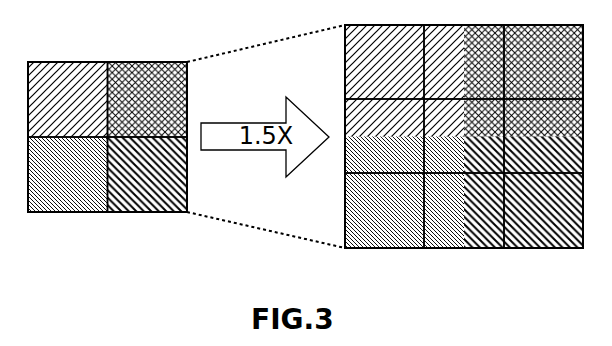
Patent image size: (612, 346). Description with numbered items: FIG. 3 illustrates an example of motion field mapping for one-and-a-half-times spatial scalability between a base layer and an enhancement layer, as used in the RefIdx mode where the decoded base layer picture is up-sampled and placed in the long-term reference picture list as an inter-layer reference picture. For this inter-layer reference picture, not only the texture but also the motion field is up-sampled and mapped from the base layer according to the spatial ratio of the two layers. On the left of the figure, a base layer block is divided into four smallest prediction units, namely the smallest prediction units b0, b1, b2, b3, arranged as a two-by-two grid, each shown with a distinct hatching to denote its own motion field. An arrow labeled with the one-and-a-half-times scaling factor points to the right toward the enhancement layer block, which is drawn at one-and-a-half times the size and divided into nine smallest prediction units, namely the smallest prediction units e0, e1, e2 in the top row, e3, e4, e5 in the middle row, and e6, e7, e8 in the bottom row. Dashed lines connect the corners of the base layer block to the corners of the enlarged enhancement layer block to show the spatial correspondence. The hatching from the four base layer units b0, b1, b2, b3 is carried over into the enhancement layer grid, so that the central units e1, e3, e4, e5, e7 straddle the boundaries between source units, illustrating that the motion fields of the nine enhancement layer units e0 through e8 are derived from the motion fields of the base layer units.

The smallest prediction unit b0 is at (68, 99).
The smallest prediction unit b1 is at (148, 99).
The smallest prediction unit b2 is at (68, 174).
The smallest prediction unit b3 is at (148, 174).
The smallest prediction unit e0 is at (384, 62).
The smallest prediction unit e1 is at (464, 62).
The smallest prediction unit e2 is at (543, 62).
The smallest prediction unit e3 is at (384, 136).
The smallest prediction unit e4 is at (464, 136).
The smallest prediction unit e5 is at (543, 136).
The smallest prediction unit e6 is at (384, 210).
The smallest prediction unit e7 is at (464, 210).
The smallest prediction unit e8 is at (543, 210).